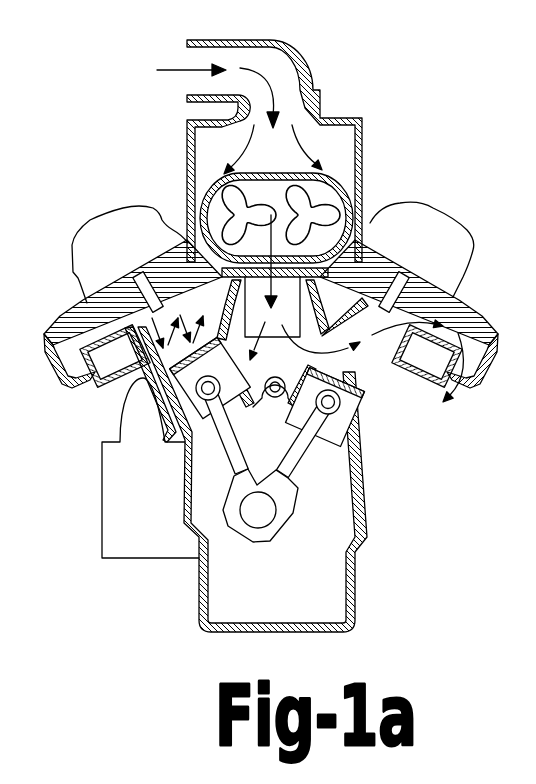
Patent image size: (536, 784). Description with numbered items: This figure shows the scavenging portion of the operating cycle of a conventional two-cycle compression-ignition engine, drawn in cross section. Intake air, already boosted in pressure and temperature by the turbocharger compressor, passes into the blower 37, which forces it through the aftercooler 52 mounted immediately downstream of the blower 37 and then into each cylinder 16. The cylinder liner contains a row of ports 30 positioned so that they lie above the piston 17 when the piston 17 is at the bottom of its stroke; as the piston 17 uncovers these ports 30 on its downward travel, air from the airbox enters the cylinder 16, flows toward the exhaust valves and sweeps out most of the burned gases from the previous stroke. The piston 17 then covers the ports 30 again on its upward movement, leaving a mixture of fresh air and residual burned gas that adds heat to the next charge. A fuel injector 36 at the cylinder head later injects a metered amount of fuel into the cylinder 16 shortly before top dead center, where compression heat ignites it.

The blower 37 is at (365, 172).
The aftercooler 52 is at (196, 243).
The fuel injector 36 is at (117, 295).
The cylinder 16 is at (370, 313).
The ports 30 is at (397, 397).
The piston 17 is at (350, 462).